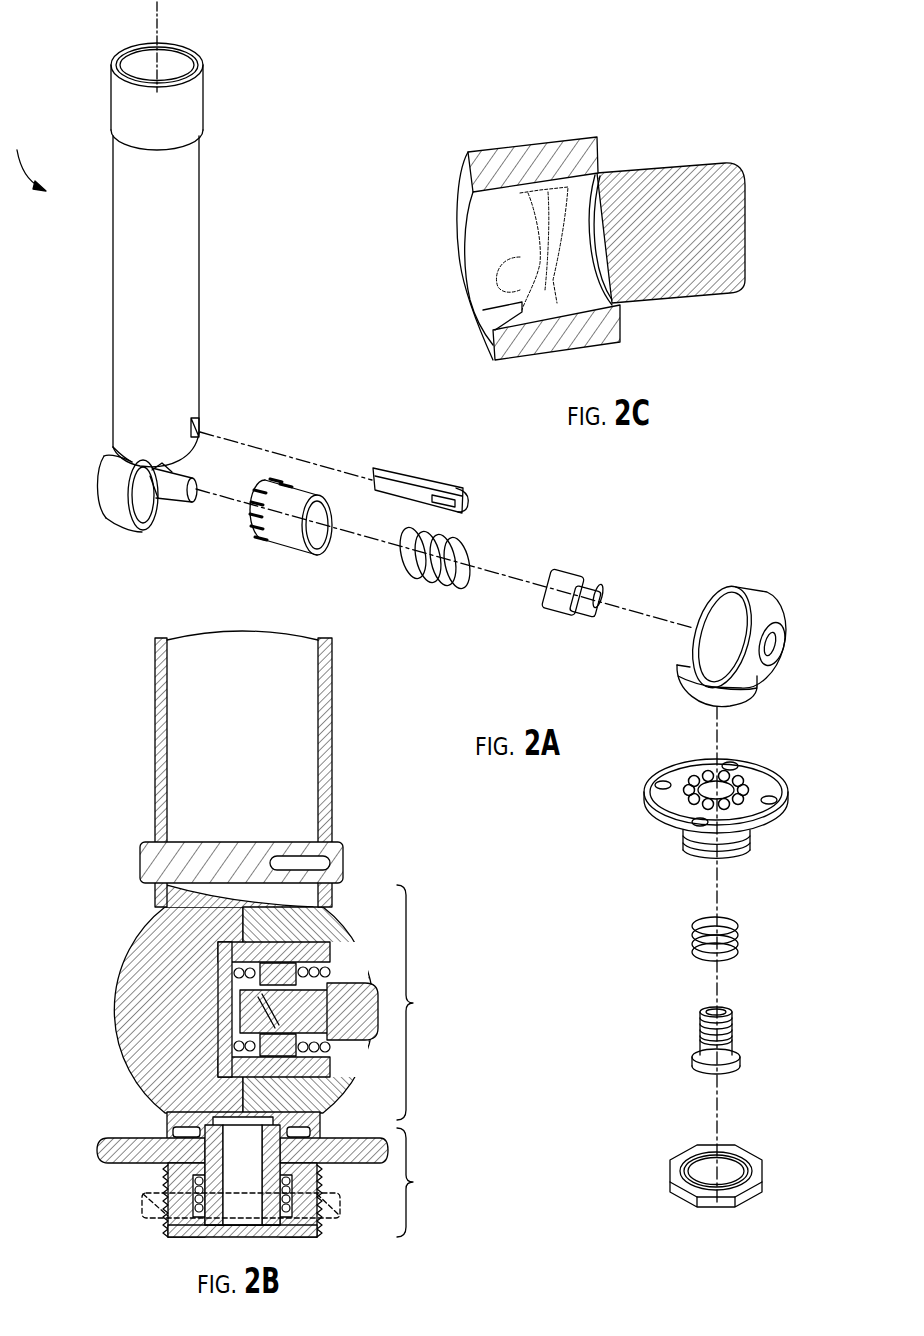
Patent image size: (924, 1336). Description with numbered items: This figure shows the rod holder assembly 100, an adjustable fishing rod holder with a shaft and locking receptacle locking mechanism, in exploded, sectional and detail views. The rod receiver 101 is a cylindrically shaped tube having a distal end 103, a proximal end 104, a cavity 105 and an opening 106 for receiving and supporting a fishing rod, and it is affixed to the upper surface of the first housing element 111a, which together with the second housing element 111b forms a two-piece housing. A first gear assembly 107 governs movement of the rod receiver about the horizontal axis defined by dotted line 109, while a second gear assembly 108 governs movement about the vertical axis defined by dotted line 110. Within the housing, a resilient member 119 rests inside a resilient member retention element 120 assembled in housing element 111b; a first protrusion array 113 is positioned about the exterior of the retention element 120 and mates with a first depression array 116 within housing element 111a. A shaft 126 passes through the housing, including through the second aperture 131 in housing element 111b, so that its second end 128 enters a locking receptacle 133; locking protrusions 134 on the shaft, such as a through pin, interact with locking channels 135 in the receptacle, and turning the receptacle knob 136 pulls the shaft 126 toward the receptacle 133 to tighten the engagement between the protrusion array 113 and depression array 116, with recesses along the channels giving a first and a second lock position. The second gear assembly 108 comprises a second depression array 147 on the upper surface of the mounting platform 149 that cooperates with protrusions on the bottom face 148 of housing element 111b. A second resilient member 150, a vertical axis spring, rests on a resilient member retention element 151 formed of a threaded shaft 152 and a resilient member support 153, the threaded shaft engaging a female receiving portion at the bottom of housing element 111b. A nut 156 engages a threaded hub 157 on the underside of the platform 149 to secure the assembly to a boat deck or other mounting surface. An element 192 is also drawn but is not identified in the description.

In FIG. 2A, the rod holder assembly 100 is at (24, 154).
In FIG. 2A, the rod receiver 101 is at (200, 230).
In FIG. 2B, the rod receiver 101 is at (155, 757).
In FIG. 2A, the distal end 103 is at (111, 62).
In FIG. 2A, the proximal end 104 is at (110, 445).
In FIG. 2A, the cavity 105 is at (152, 34).
In FIG. 2A, the opening 106 is at (182, 56).
In FIG. 2B, the first gear assembly 107 is at (425, 1002).
In FIG. 2B, the second gear assembly 108 is at (425, 1182).
In FIG. 2A, the dotted line 109 is at (628, 605).
In FIG. 2A, the dotted line 110 is at (720, 735).
In FIG. 2A, the first housing element 111a is at (117, 495).
In FIG. 2B, the first housing element 111a is at (127, 960).
In FIG. 2A, the second housing element 111b is at (768, 595).
In FIG. 2B, the second housing element 111b is at (330, 930).
In FIG. 2A, the first protrusion array 113 is at (275, 482).
In FIG. 2A, the first depression array 116 is at (138, 524).
In FIG. 2A, the resilient member 119 is at (467, 535).
In FIG. 2B, the resilient member 119 is at (233, 1042).
In FIG. 2A, the resilient member retention element 120 is at (305, 490).
In FIG. 2A, the shaft 126 is at (167, 494).
In FIG. 2A, the second end 128 is at (162, 470).
In FIG. 2B, the second end 128 is at (267, 1007).
In FIG. 2A, the second aperture 131 is at (772, 644).
In FIG. 2A, the locking receptacle 133 is at (563, 568).
In FIG. 2C, the locking receptacle 133 is at (537, 142).
In FIG. 2B, the locking receptacle 133 is at (312, 980).
In FIG. 2A, the locking protrusions 134 is at (175, 502).
In FIG. 2C, the locking channels 135 is at (533, 237).
In FIG. 2A, the receptacle knob 136 is at (580, 610).
In FIG. 2C, the receptacle knob 136 is at (682, 162).
In FIG. 2B, the receptacle knob 136 is at (370, 1025).
In FIG. 2A, the second depression array 147 is at (745, 773).
In FIG. 2A, the bottom face 148 is at (693, 703).
In FIG. 2A, the mounting platform 149 is at (782, 800).
In FIG. 2B, the mounting platform 149 is at (108, 1163).
In FIG. 2A, the second resilient member 150 is at (740, 920).
In FIG. 2B, the second resilient member 150 is at (280, 1216).
In FIG. 2A, the resilient member retention element 151 is at (740, 1048).
In FIG. 2B, the resilient member retention element 151 is at (204, 1173).
In FIG. 2A, the threaded shaft 152 is at (700, 1038).
In FIG. 2A, the resilient member support 153 is at (692, 1065).
In FIG. 2B, the resilient member support 153 is at (207, 1224).
In FIG. 2A, the nut 156 is at (767, 1173).
In FIG. 2B, the nut 156 is at (333, 1218).
In FIG. 2A, the threaded hub 157 is at (747, 850).
In FIG. 2B, the threaded hub 157 is at (168, 1225).
In FIG. 2A, the locking pin 192 is at (410, 483).
In FIG. 2B, the locking pin 192 is at (338, 843).